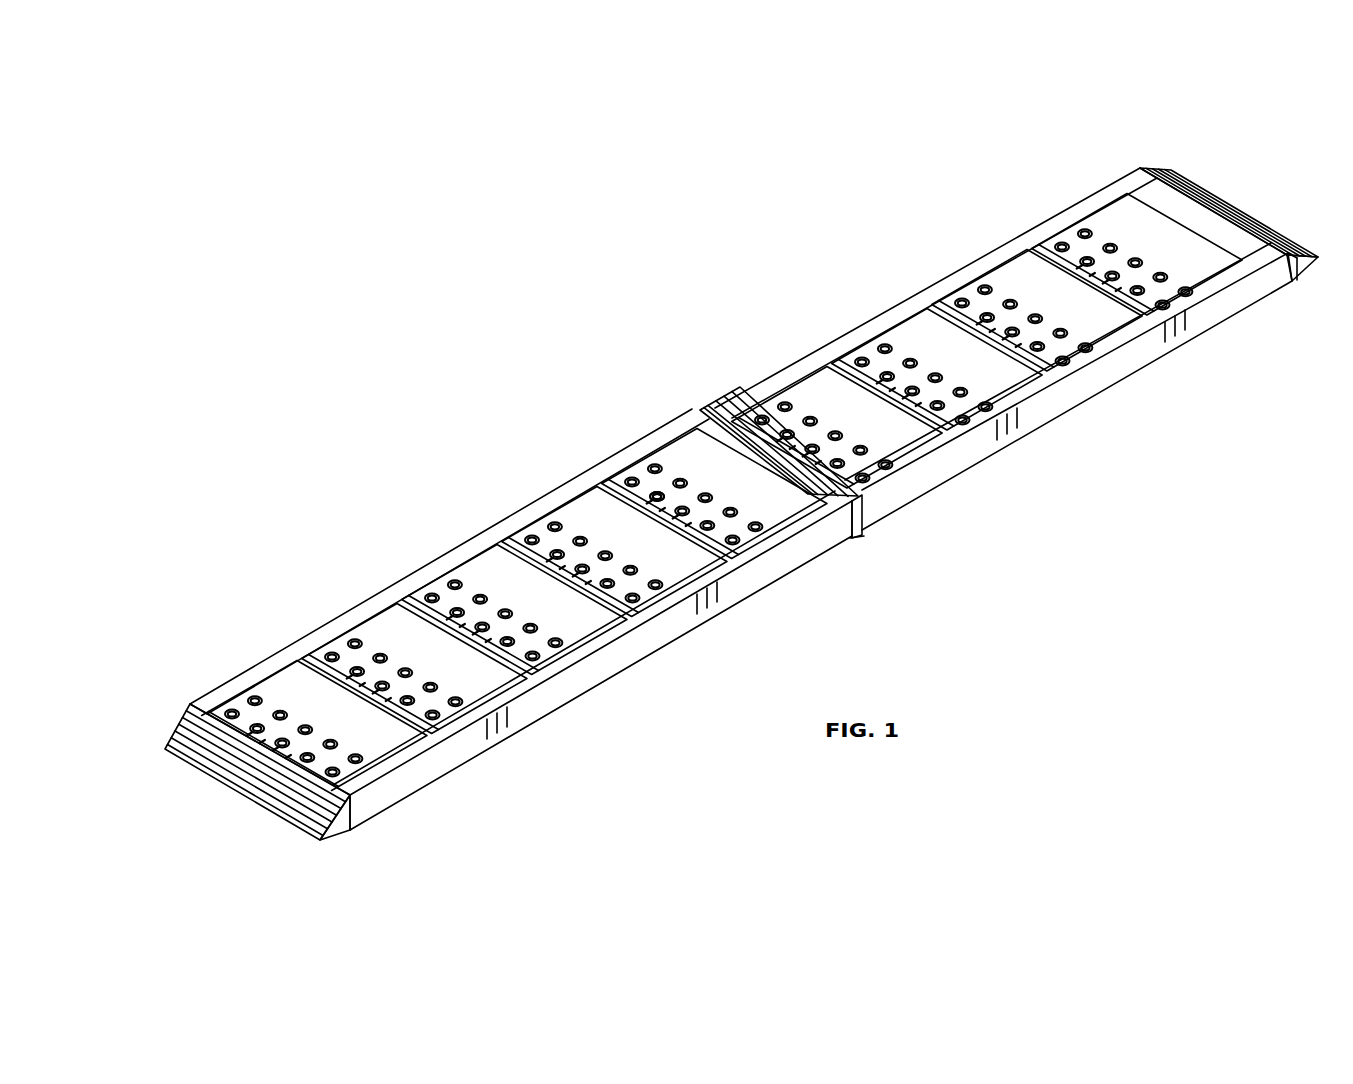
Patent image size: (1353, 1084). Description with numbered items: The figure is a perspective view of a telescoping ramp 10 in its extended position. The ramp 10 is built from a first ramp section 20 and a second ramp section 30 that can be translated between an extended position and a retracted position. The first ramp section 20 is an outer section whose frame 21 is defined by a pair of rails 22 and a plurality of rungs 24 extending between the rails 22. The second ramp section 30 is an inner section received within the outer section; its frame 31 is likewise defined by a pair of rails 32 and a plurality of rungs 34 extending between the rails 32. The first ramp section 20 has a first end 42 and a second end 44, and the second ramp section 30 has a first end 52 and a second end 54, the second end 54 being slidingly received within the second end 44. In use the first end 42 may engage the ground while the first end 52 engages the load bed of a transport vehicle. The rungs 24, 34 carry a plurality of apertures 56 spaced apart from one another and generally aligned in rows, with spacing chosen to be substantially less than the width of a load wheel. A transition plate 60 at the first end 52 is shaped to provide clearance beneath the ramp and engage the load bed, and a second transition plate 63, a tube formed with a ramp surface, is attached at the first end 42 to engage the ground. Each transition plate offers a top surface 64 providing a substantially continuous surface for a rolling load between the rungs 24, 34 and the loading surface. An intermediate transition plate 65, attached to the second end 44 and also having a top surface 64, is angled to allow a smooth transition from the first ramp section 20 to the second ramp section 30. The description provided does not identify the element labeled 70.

The telescoping ramp 10 is at (702, 502).
The first ramp section 20 is at (469, 588).
The frame 21 is at (607, 662).
The rails 22 is at (362, 614).
The rungs 24 is at (232, 706).
The second ramp section 30 is at (988, 325).
The frame 31 is at (1105, 365).
The rails 32 is at (808, 355).
The rungs 34 is at (772, 410).
The first end 42 is at (352, 812).
The second end 44 is at (853, 541).
The first end 52 is at (1283, 272).
The second end 54 is at (864, 533).
The apertures 56 is at (655, 495).
The transition plate 60 is at (1200, 198).
The second transition plate 63 is at (215, 762).
The top surface 64 is at (235, 786).
The intermediate transition plate 65 is at (817, 477).
The hinge 70 is at (778, 441).